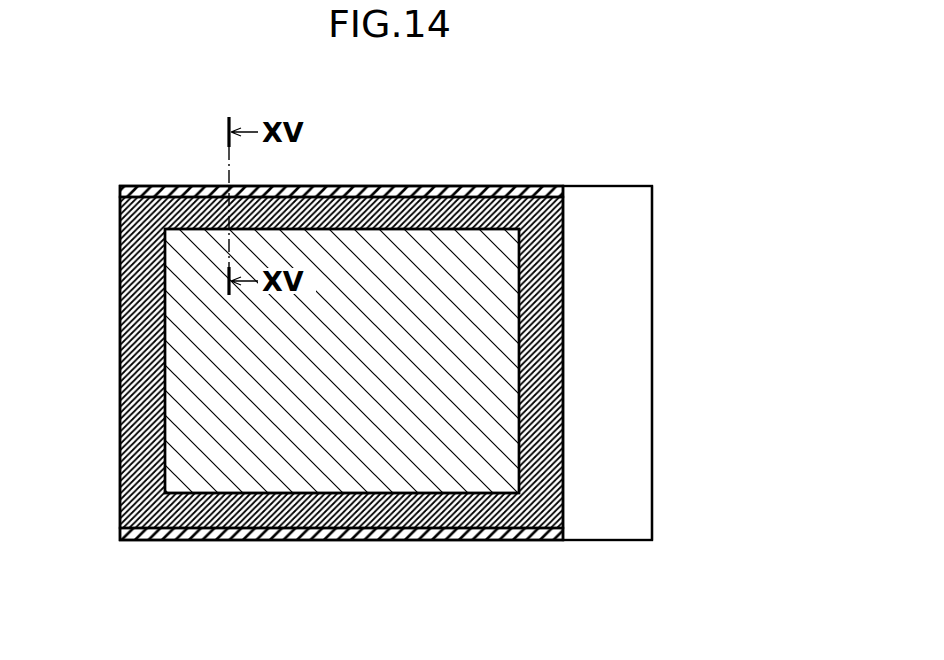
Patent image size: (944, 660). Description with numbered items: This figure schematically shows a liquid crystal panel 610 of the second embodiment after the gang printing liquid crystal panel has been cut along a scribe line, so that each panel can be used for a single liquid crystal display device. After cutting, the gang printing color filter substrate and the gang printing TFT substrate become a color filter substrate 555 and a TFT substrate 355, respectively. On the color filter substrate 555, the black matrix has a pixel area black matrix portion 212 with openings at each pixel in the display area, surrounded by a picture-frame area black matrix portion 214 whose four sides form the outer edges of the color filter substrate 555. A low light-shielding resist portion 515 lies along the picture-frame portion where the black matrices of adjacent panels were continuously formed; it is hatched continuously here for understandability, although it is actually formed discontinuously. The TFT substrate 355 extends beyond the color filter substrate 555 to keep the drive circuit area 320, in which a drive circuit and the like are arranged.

The liquid crystal panel 610 is at (559, 100).
The drive circuit area 320 is at (623, 301).
The TFT substrate 355 is at (652, 400).
The color filter substrate 555 is at (563, 477).
The low light-shielding resist portion 515 is at (206, 540).
The picture-frame area black matrix portion 214 is at (318, 518).
The pixel area black matrix portion 212 is at (446, 470).